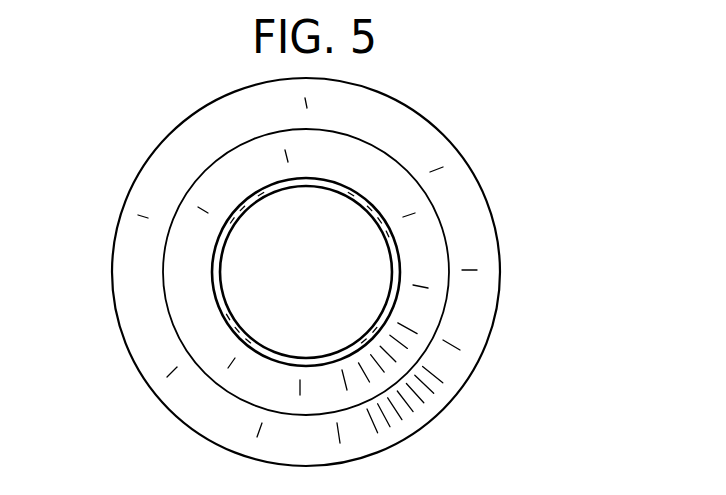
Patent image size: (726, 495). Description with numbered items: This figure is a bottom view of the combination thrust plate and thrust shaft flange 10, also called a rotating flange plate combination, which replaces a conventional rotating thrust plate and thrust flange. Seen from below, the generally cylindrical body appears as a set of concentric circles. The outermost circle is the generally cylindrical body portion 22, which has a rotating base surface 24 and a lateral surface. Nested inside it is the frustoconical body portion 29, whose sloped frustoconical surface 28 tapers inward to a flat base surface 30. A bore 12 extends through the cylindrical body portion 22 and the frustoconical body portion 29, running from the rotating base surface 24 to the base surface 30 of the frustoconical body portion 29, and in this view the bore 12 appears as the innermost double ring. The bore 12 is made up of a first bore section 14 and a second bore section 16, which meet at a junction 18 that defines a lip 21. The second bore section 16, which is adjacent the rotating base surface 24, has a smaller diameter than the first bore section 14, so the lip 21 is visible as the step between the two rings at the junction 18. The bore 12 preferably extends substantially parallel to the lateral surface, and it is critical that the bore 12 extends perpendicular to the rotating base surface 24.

The combination thrust plate and thrust shaft flange 10 is at (538, 143).
The bore 12 is at (333, 292).
The first bore section 14 is at (354, 188).
The second bore section 16 is at (384, 243).
The junction 18 is at (376, 327).
The lip 21 is at (258, 193).
The generally cylindrical body portion 22 is at (497, 233).
The rotating base surface 24 is at (133, 248).
The frustoconical surface 28 is at (482, 318).
The frustoconical body portion 29 is at (453, 369).
The base surface 30 is at (210, 336).